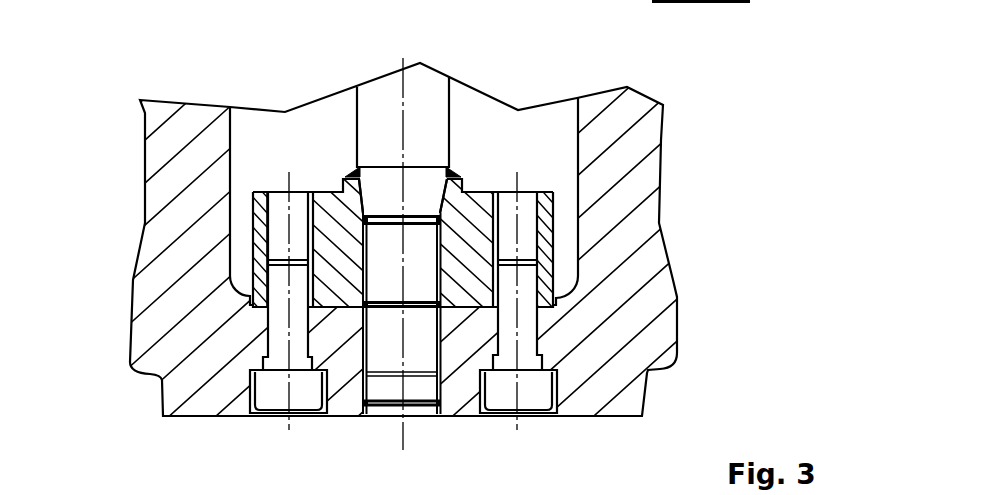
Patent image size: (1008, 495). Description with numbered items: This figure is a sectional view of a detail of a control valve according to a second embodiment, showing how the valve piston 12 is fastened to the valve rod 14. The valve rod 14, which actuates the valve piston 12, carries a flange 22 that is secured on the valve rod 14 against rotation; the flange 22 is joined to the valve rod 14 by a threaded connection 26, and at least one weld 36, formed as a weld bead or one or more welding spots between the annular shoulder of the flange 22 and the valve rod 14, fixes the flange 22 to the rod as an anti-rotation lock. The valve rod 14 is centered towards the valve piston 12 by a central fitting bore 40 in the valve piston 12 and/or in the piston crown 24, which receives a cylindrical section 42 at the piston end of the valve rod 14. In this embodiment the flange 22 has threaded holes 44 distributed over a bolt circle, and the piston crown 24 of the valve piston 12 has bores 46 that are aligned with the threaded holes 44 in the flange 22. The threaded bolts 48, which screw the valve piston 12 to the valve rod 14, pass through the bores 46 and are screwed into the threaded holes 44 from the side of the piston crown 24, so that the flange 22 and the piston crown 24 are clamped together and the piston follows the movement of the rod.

The valve piston 12 is at (650, 283).
The valve rod 14 is at (425, 92).
The flange 22 is at (465, 293).
The piston crown 24 is at (333, 358).
The threaded connection 26 is at (360, 232).
The weld 36 is at (450, 168).
The central fitting bore 40 is at (362, 365).
The cylindrical section 42 is at (410, 343).
The threaded holes 44 is at (263, 237).
The bores 46 is at (375, 168).
The threaded bolts 48 is at (267, 397).